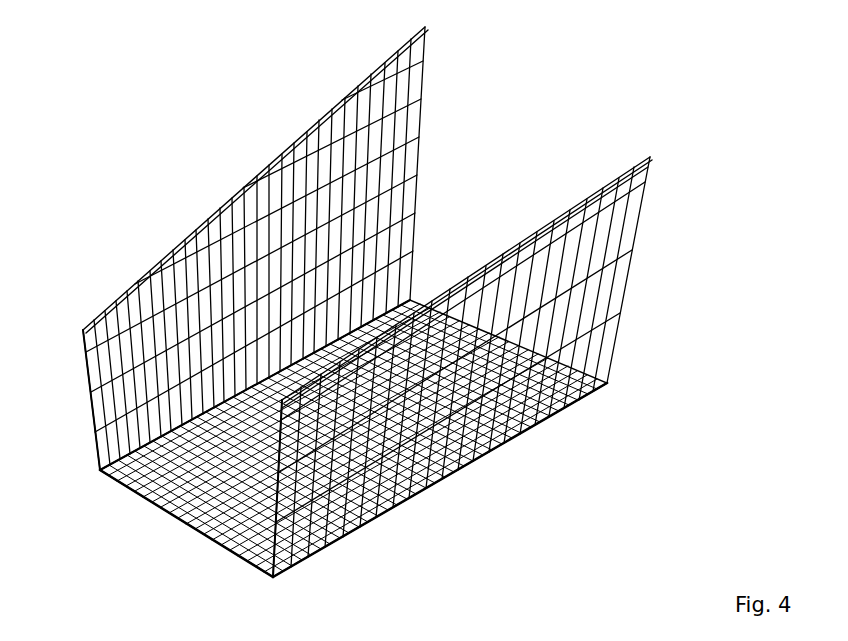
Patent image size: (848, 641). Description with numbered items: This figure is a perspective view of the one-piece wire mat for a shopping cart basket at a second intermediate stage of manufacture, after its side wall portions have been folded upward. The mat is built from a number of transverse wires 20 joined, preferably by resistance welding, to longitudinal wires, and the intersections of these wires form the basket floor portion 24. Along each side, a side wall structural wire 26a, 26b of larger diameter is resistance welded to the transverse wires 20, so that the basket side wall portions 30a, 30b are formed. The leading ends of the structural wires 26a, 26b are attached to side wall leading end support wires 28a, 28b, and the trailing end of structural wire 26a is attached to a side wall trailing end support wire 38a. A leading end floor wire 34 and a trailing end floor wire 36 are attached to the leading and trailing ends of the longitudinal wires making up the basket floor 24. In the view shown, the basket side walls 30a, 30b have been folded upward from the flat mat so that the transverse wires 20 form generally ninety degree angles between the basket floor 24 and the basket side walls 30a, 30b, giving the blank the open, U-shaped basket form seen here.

The transverse wires 20 is at (100, 476).
The basket floor portion 24 is at (413, 139).
The side wall structural wire 26a is at (613, 322).
The side wall structural wire 26b is at (428, 45).
The side wall leading end support wire 28a is at (256, 570).
The side wall leading end support wire 28b is at (98, 435).
The basket side wall portion 30a is at (383, 506).
The basket side wall portion 30b is at (165, 277).
The leading end floor wire 34 is at (191, 521).
The trailing end floor wire 36 is at (410, 303).
The side wall trailing end support wire 38a is at (627, 262).